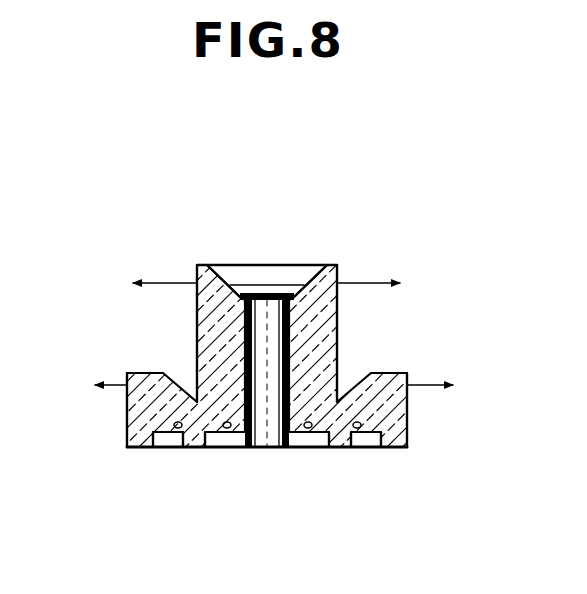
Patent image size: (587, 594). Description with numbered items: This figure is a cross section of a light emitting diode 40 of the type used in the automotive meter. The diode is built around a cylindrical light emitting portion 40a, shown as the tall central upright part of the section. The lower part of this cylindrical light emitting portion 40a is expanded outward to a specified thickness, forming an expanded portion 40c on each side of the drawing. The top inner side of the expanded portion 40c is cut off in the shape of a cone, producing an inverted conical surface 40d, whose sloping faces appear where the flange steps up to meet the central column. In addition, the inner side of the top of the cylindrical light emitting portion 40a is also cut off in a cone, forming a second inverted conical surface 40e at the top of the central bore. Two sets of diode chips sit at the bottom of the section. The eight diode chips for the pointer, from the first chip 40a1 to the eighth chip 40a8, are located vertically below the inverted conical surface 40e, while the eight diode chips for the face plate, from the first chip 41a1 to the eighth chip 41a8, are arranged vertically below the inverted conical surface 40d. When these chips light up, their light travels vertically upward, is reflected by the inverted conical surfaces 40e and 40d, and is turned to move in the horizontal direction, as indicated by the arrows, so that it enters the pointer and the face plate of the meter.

The light emitting diode 40 is at (276, 204).
The cylindrical light emitting portion 40a is at (334, 265).
The inverted conical surface 40e is at (232, 265).
The inverted conical surface 40d is at (173, 372).
The expanded portion 40c is at (127, 426).
The diode chip for the pointer 40a1 is at (220, 448).
The diode chip for the face plate 41a1 is at (153, 447).
The diode chip for the pointer 40a8 is at (295, 448).
The diode chip for the face plate 41a8 is at (330, 447).